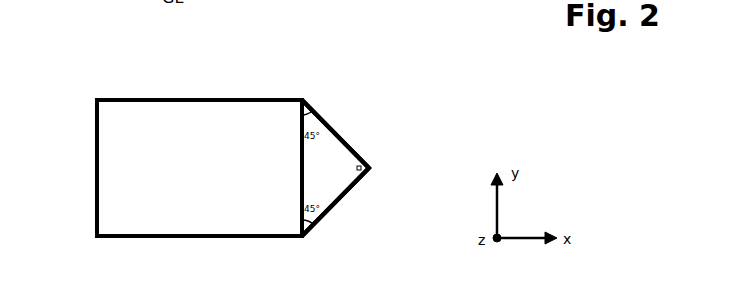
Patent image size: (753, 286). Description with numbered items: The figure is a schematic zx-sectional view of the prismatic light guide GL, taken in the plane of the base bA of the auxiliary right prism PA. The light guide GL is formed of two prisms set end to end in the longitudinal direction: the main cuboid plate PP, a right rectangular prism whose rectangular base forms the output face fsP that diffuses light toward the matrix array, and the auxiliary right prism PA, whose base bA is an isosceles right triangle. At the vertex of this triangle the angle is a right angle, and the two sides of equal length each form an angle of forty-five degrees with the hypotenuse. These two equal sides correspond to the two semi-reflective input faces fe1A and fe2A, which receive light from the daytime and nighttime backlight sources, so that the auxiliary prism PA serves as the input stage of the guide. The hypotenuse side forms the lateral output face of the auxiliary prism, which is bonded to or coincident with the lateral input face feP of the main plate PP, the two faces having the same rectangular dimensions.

The light guide GL is at (73, 116).
The cuboid plate PP is at (136, 92).
The output face fsP is at (235, 98).
The auxiliary right prism PA is at (348, 124).
The first input face fe1A is at (358, 155).
The second input face fe2A is at (330, 210).
The base of the auxiliary right prism bA is at (315, 168).
The lateral input face feP is at (298, 214).